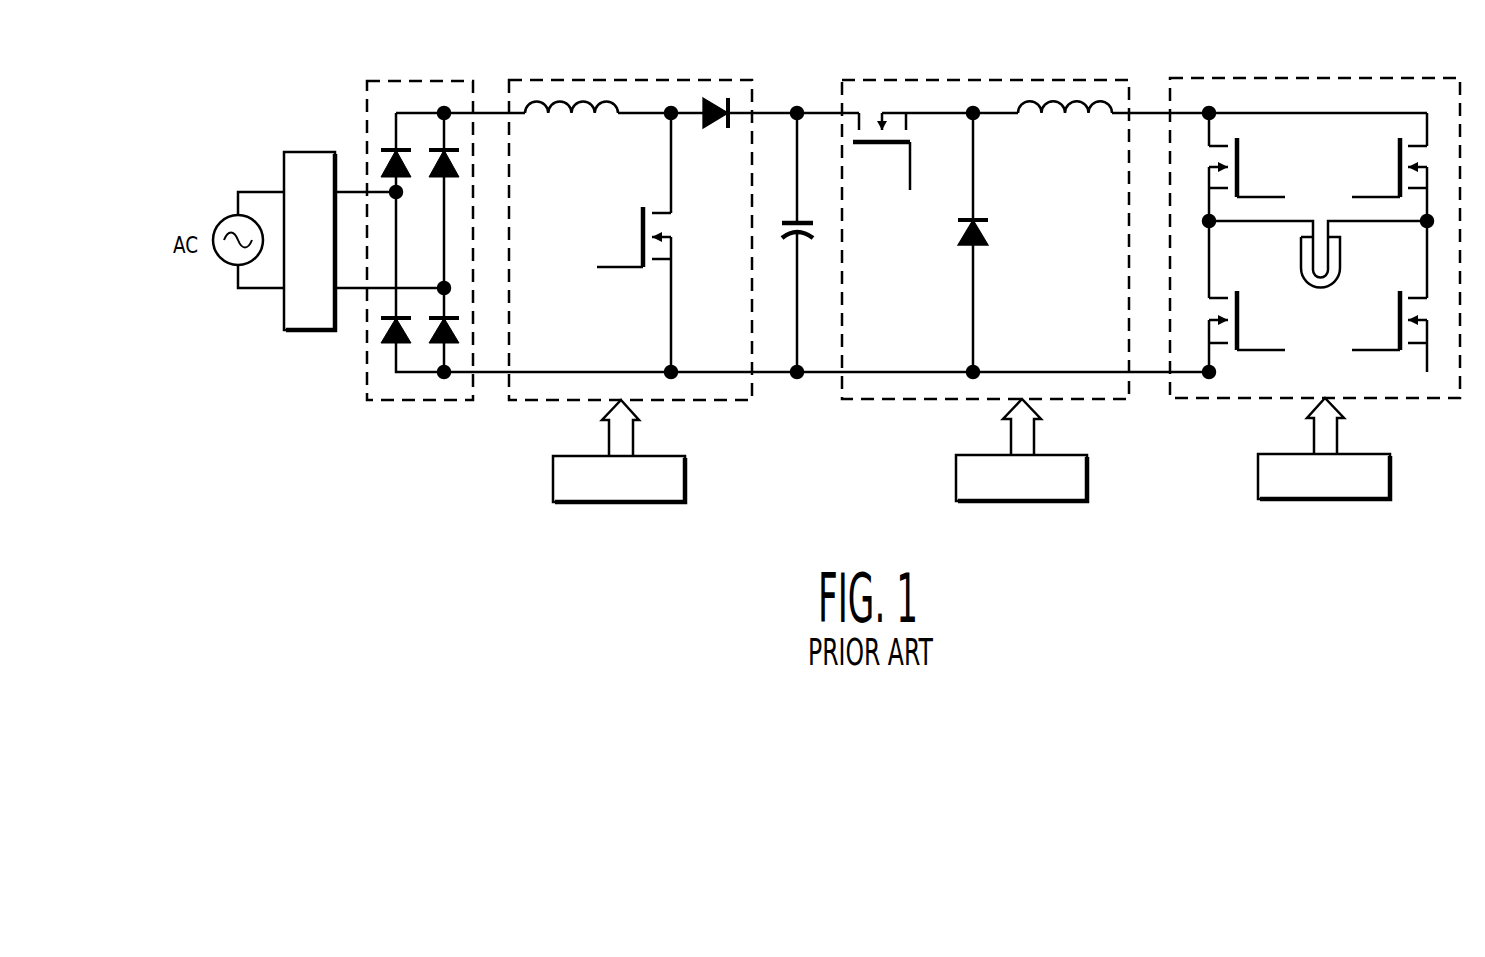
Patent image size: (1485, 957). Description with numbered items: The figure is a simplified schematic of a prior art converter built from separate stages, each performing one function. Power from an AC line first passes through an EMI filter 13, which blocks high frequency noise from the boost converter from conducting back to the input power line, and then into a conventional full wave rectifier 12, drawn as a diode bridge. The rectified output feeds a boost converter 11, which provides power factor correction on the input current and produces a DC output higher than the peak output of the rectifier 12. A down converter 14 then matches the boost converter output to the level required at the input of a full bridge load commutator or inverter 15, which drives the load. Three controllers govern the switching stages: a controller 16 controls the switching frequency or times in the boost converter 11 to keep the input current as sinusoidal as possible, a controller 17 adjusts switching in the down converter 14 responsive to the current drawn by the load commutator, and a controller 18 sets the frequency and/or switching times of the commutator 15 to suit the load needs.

The boost converter 11 is at (540, 403).
The full wave rectifier 12 is at (448, 402).
The EMI filter 13 is at (303, 332).
The down converter 14 is at (877, 402).
The full bridge load commutator or inverter 15 is at (1252, 402).
The controller 16 is at (690, 465).
The controller 17 is at (1088, 478).
The controller 18 is at (1392, 466).